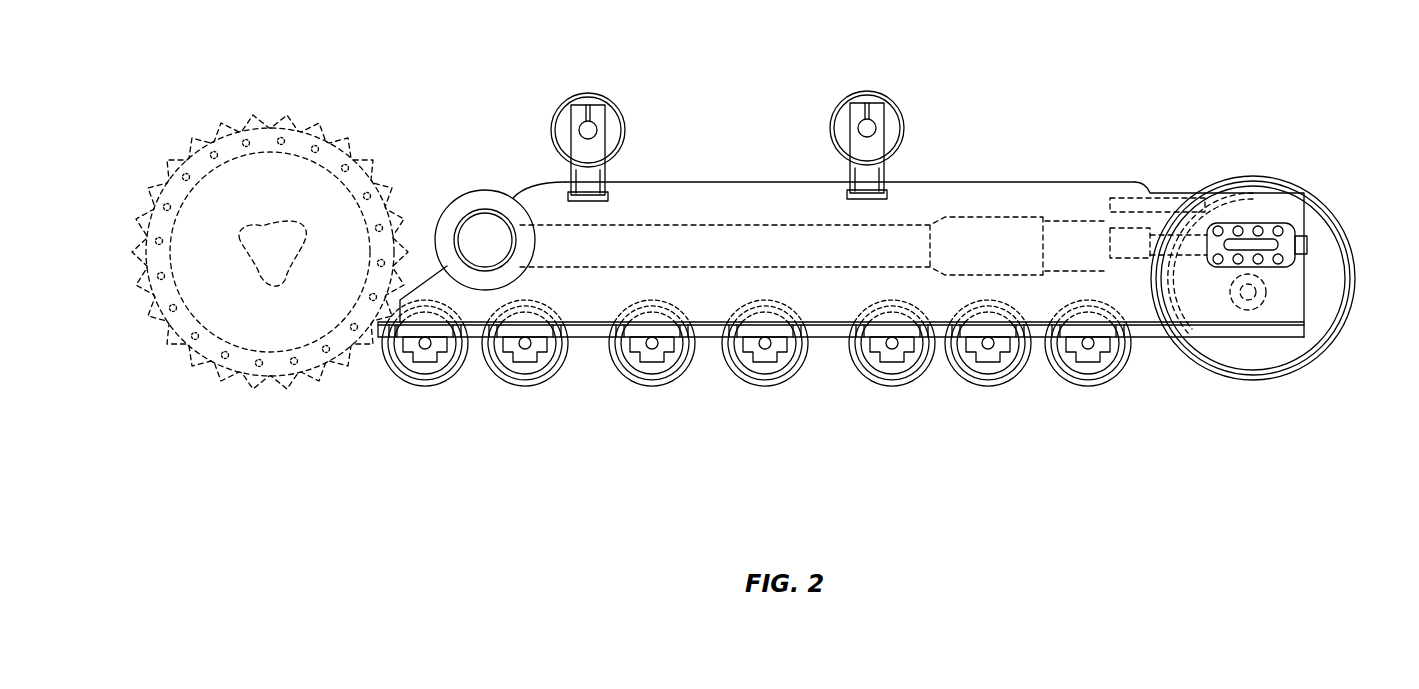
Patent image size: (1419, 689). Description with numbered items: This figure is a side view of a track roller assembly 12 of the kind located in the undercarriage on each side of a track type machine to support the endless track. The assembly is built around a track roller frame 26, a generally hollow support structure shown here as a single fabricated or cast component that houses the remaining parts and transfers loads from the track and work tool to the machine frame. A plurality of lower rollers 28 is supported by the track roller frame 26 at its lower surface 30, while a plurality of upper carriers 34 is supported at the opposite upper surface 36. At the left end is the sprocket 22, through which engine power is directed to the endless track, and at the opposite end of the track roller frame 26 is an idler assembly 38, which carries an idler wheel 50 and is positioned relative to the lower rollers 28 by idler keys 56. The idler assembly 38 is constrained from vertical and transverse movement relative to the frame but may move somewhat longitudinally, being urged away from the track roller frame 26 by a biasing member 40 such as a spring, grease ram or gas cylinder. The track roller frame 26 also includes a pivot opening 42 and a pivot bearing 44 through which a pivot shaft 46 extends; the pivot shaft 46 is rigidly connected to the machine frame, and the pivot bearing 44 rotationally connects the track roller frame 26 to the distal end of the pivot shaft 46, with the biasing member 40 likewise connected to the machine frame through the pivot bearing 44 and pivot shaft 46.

The track roller assembly 12 is at (1170, 140).
The sprocket 22 is at (243, 332).
The track roller frame 26 is at (786, 208).
The lower rollers 28 is at (858, 369).
The lower surface 30 is at (1046, 337).
The upper carriers 34 is at (617, 108).
The upper surface 36 is at (663, 186).
The idler assembly 38 is at (1280, 165).
The biasing member 40 is at (975, 238).
The pivot opening 42 is at (526, 272).
The pivot bearing 44 is at (517, 239).
The pivot shaft 46 is at (468, 227).
The idler wheel 50 is at (1316, 240).
The idler keys 56 is at (1292, 254).